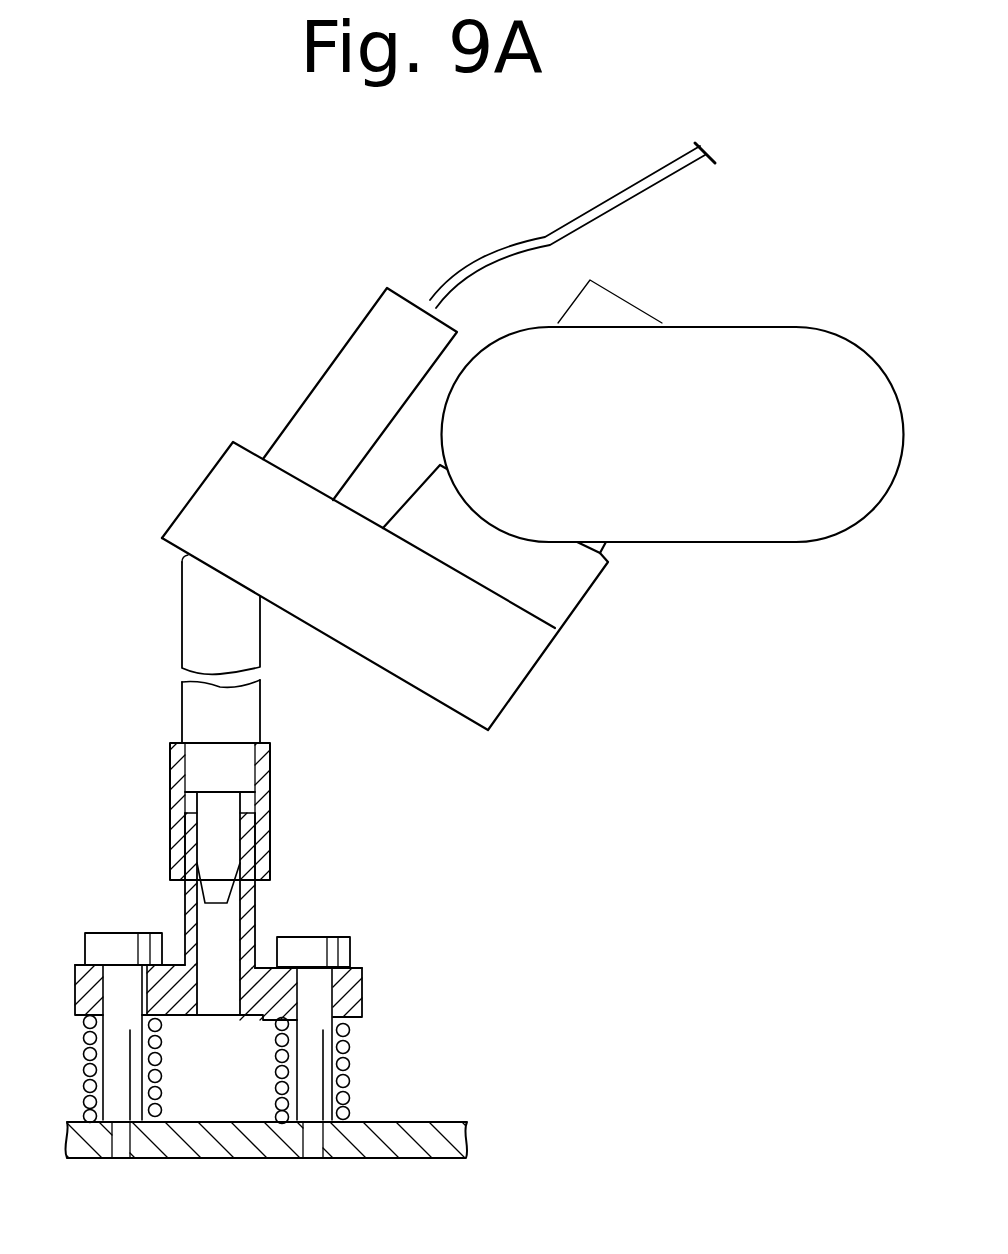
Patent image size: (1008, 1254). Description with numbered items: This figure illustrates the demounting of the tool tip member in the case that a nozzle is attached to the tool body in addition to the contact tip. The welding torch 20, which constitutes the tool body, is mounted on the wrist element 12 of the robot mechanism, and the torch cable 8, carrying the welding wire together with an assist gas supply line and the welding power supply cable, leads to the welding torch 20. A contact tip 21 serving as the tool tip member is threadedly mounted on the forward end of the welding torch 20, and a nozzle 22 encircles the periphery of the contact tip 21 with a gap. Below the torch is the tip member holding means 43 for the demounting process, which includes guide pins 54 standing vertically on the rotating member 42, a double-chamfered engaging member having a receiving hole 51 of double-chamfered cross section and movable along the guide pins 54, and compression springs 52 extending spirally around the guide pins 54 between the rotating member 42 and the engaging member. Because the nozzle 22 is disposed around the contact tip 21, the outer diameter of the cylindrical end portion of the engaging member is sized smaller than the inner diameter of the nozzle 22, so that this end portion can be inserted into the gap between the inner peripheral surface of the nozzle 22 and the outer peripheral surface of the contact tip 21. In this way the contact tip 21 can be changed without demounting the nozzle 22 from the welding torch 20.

The torch cable 8 is at (547, 238).
The wrist element 12 is at (780, 343).
The welding torch 20 is at (313, 387).
The contact tip 21 is at (210, 823).
The nozzle 22 is at (270, 781).
The rotating member 42 is at (447, 1123).
The tip member holding means 43 is at (423, 905).
The receiving hole 51 is at (234, 915).
The compression springs 52 is at (350, 1060).
The guide pins 54 is at (117, 938).